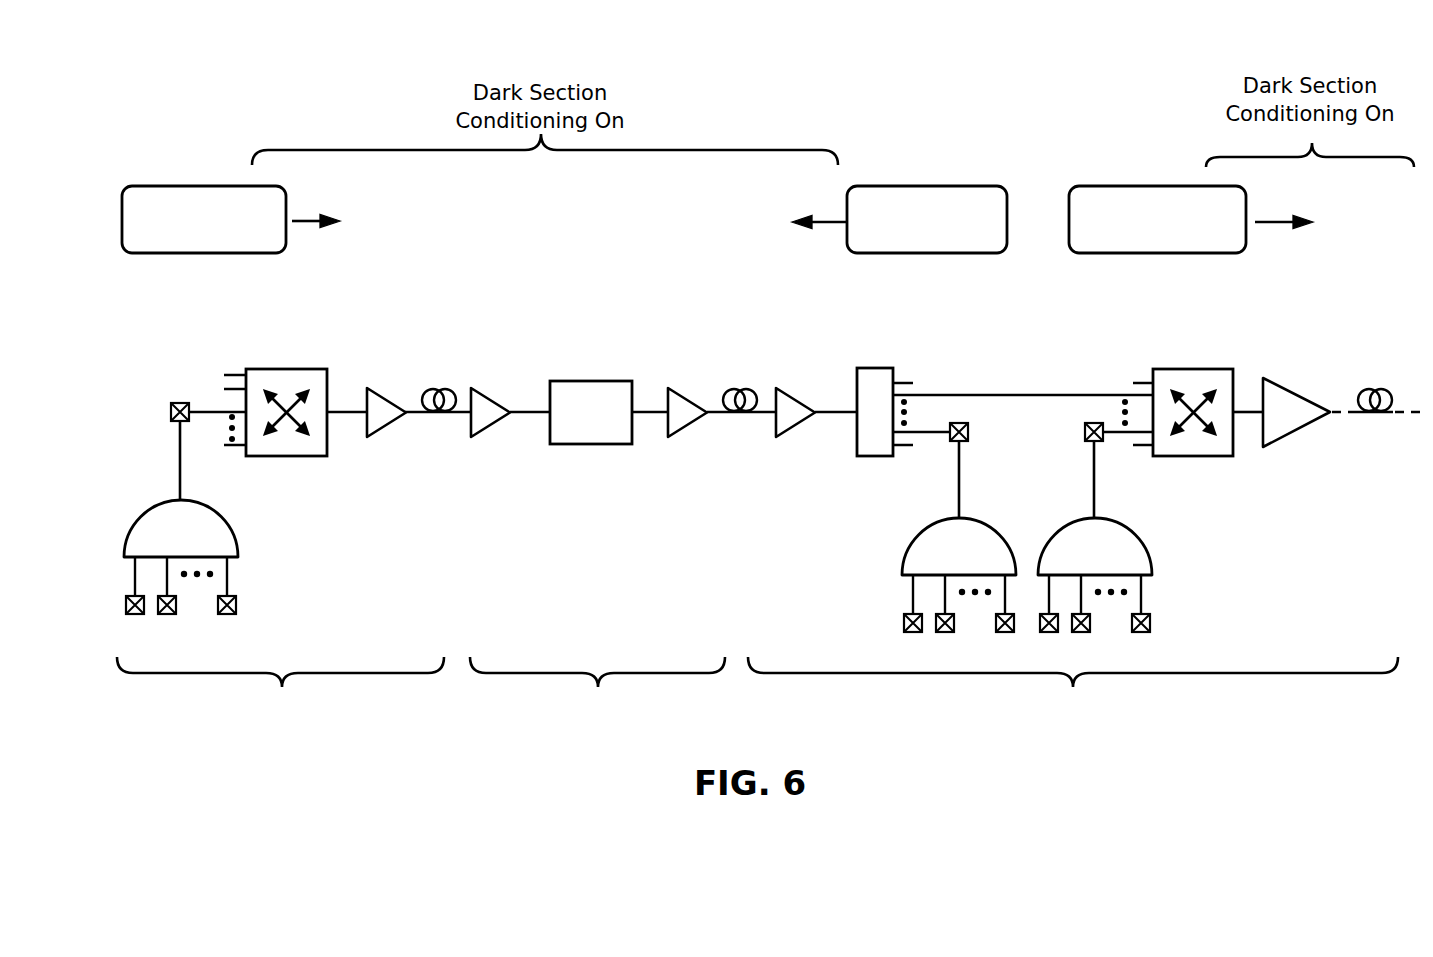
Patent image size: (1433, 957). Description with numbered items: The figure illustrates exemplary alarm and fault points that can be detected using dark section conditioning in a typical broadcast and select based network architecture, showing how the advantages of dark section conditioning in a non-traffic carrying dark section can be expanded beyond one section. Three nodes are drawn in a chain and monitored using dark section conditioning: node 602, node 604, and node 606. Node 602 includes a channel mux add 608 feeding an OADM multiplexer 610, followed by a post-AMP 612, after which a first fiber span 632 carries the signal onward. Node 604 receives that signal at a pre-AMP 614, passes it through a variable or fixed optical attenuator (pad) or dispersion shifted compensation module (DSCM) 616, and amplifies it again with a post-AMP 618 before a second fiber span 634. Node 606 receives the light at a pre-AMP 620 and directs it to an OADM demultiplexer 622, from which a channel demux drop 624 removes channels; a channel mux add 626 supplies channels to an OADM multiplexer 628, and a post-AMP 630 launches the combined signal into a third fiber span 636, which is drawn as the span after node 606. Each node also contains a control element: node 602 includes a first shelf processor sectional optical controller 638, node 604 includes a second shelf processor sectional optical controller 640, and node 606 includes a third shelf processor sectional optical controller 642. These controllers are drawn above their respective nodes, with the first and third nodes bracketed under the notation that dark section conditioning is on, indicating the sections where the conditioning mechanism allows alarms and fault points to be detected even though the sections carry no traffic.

The node 602 is at (280, 688).
The node 604 is at (597, 688).
The node 606 is at (1073, 688).
The channel mux add 608 is at (231, 520).
The OADM multiplexer 610 is at (267, 369).
The post-AMP 612 is at (378, 433).
The pre-AMP 614 is at (481, 433).
The variable or fixed optical attenuator (pad) or dispersion shifted compensation mo 616 is at (567, 381).
The post-AMP 618 is at (679, 433).
The pre-AMP 620 is at (787, 433).
The OADM demultiplexer 622 is at (870, 368).
The channel demux drop 624 is at (993, 528).
The channel mux add 626 is at (1130, 527).
The OADM multiplexer 628 is at (1170, 369).
The post-AMP 630 is at (1287, 437).
The first fiber span 632 is at (431, 388).
The second fiber span 634 is at (733, 388).
The third fiber span 636 is at (1375, 389).
The first shelf processor sectional optical controller 638 is at (223, 253).
The second shelf processor sectional optical controller 640 is at (948, 253).
The third shelf processor sectional optical controller 642 is at (1158, 253).